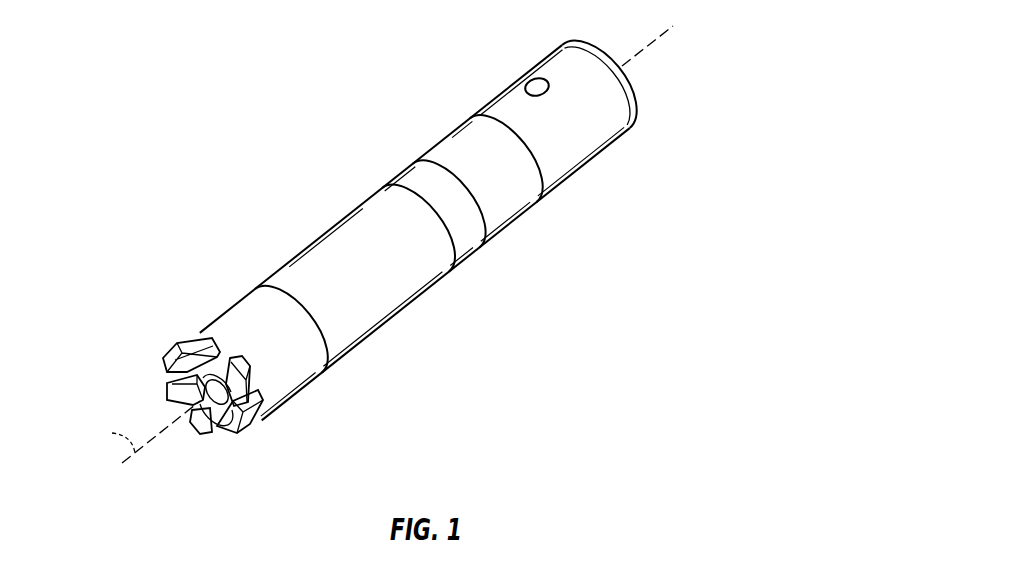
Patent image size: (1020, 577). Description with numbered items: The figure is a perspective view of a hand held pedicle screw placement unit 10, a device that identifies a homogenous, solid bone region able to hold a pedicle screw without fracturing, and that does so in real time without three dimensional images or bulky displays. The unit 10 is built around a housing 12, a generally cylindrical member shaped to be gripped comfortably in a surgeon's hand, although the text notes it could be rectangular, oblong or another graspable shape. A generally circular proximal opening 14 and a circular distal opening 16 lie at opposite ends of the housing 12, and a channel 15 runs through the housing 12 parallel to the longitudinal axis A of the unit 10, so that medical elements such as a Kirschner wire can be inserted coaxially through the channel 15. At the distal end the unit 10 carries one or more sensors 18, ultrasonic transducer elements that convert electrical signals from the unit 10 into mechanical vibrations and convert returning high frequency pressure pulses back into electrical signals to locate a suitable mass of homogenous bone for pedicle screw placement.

The pedicle screw placement unit 10 is at (292, 173).
The housing 12 is at (409, 304).
The proximal opening 14 is at (602, 55).
The channel 15 is at (177, 392).
The distal opening 16 is at (212, 430).
The sensor 18 is at (153, 375).
The longitudinal axis A is at (114, 437).